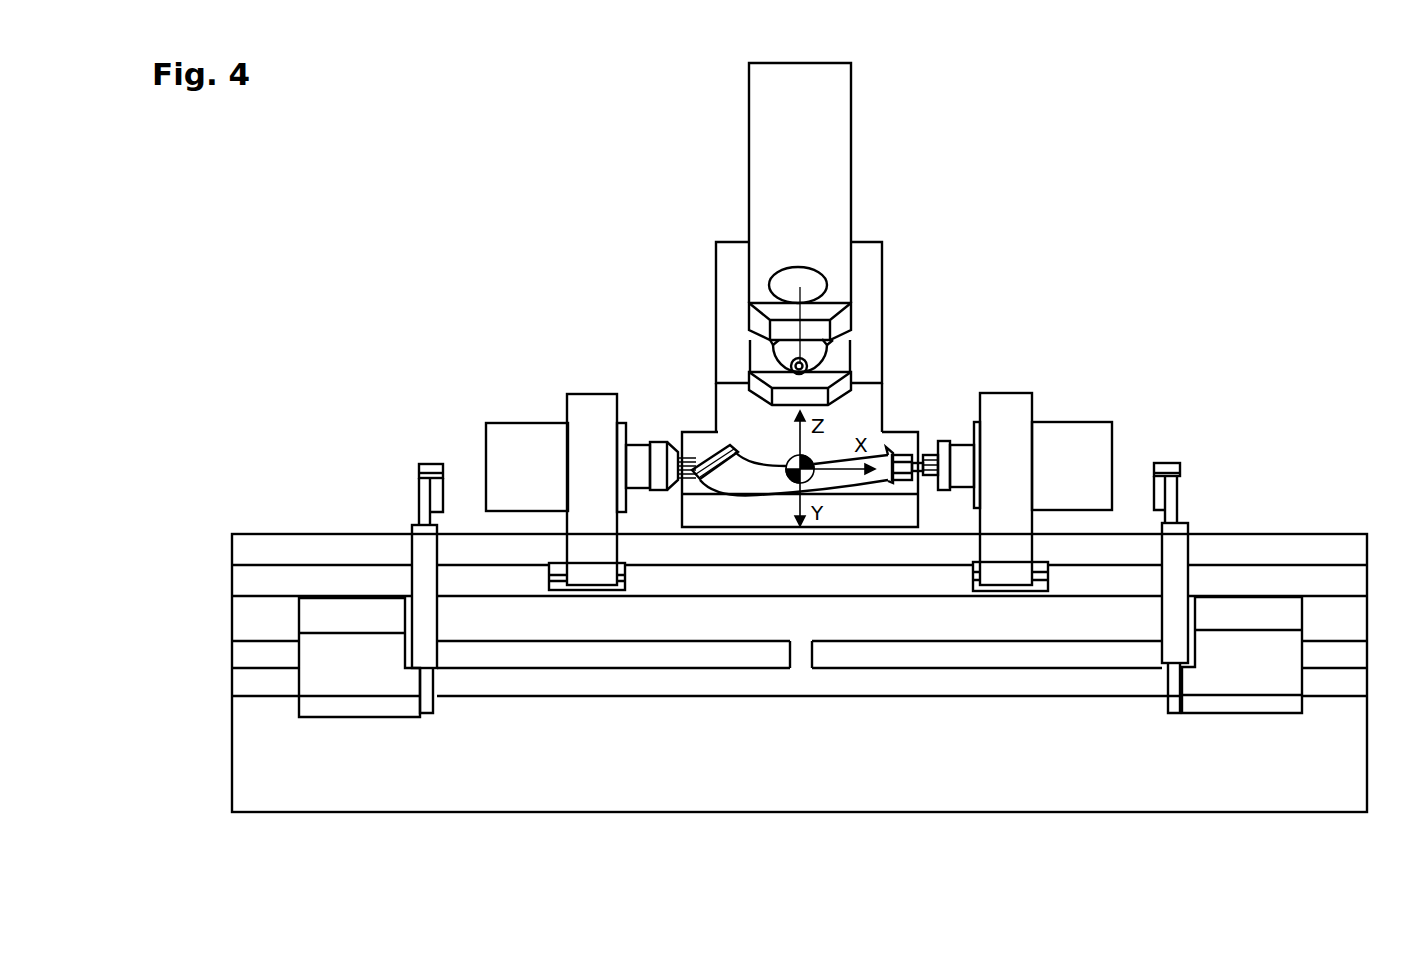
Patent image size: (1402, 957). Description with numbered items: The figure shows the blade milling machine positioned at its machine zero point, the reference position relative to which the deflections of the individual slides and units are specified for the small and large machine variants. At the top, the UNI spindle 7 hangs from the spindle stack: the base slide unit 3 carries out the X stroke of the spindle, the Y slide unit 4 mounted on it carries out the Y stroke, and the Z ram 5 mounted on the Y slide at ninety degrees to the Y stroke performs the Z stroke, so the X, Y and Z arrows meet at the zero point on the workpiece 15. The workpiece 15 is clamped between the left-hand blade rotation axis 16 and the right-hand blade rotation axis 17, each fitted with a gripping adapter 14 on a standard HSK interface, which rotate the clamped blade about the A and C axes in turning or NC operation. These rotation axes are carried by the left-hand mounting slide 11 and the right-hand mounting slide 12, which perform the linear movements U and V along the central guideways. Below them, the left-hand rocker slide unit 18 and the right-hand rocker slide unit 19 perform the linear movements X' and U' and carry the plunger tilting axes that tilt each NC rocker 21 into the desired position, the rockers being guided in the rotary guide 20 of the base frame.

The base slide unit 3 is at (902, 443).
The Y slide unit 4 is at (867, 275).
The Z ram 5 is at (812, 128).
The UNI spindle 7 is at (813, 356).
The left-hand mounting slide 11 is at (585, 455).
The right-hand mounting slide 12 is at (1006, 452).
The gripping adapter 14 is at (640, 461).
The workpiece 15 is at (757, 480).
The left-hand blade rotation axis 16 is at (516, 455).
The right-hand blade rotation axis 17 is at (1082, 453).
The left-hand rocker slide unit 18 is at (347, 670).
The right-hand rocker slide unit 19 is at (1248, 665).
The rotary guide 20 is at (659, 655).
The NC rocker 21 is at (424, 493).